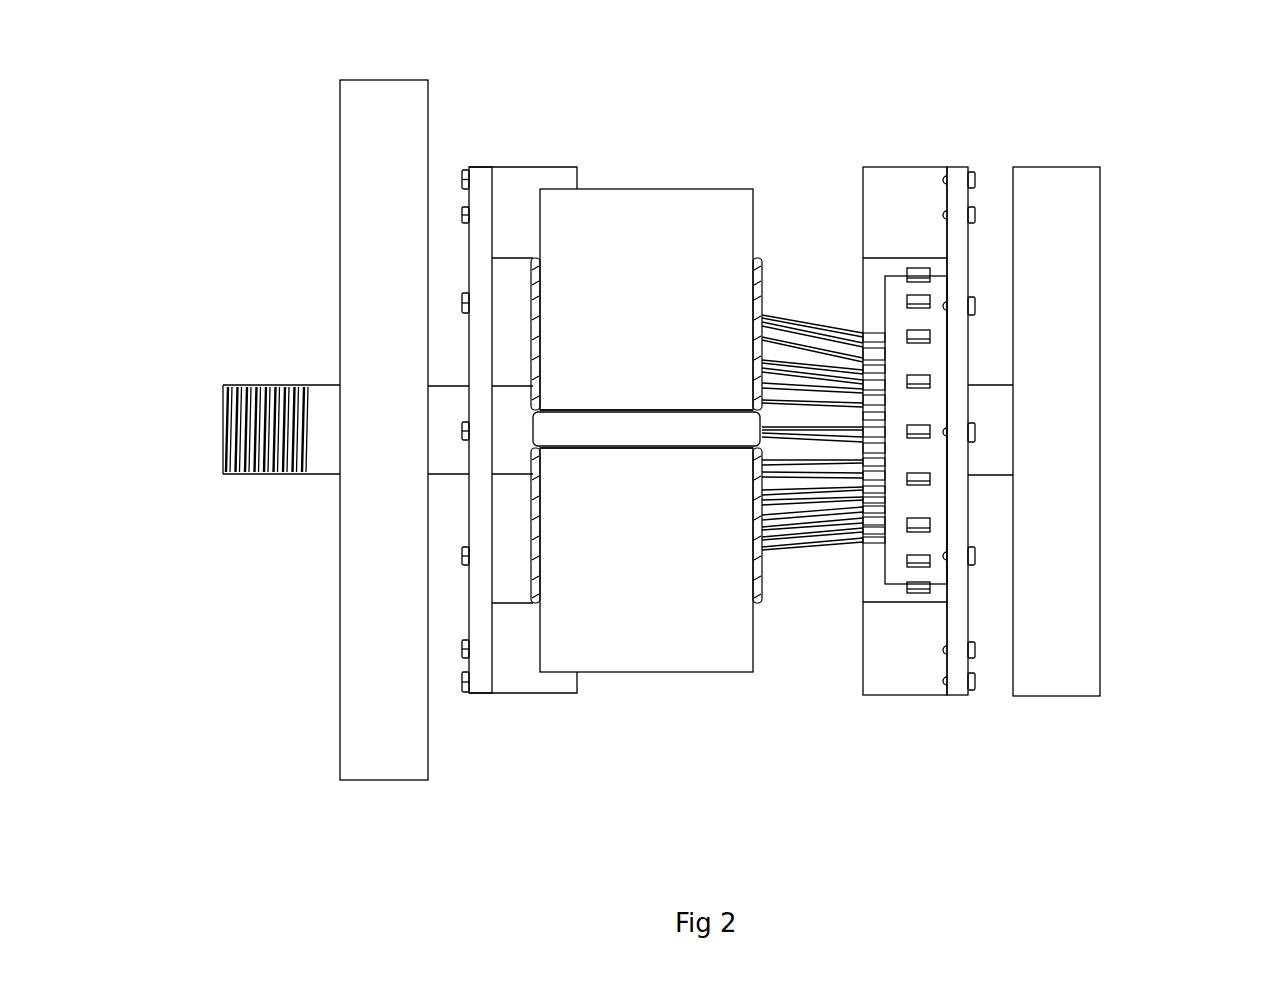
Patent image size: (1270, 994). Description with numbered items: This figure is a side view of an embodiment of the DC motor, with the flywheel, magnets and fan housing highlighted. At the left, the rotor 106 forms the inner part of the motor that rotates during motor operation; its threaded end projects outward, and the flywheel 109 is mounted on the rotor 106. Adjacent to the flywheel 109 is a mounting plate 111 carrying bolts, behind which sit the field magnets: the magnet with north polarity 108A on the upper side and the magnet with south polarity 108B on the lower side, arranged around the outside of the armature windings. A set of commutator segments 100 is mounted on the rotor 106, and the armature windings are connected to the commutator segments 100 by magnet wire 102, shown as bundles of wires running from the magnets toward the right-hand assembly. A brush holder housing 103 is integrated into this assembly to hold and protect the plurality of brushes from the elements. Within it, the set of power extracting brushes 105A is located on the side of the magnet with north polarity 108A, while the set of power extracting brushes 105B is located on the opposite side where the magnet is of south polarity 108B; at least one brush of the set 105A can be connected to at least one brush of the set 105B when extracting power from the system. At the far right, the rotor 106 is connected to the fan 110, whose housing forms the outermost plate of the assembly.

The commutator segments 100 is at (877, 490).
The magnet wire 102 is at (770, 342).
The brush holder housing 103 is at (913, 457).
The power extracting brushes 105A is at (918, 297).
The power extracting brushes 105B is at (920, 483).
The rotor 106 is at (233, 430).
The magnet with north polarity 108A is at (632, 215).
The magnet with south polarity 108B is at (643, 648).
The flywheel 109 is at (377, 113).
The fan 110 is at (1055, 312).
The mounting plate 111 is at (481, 675).